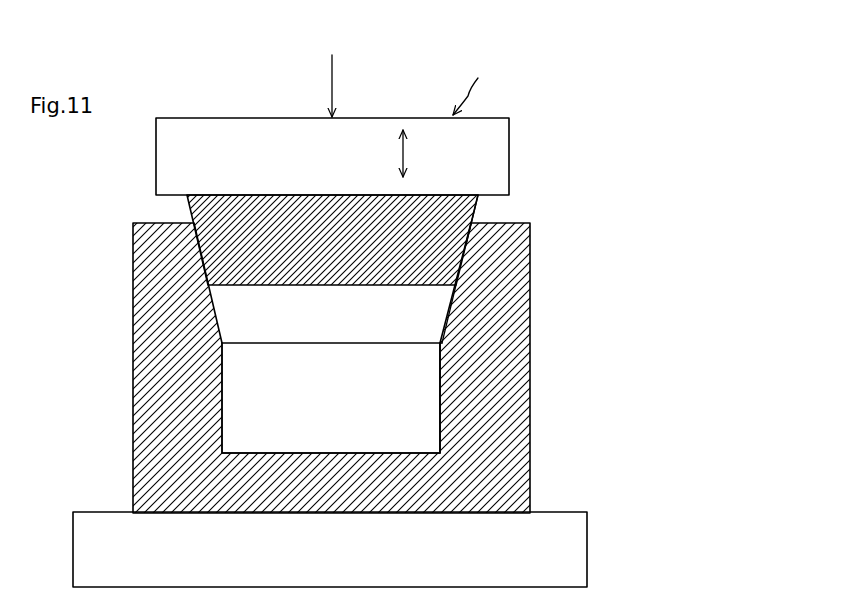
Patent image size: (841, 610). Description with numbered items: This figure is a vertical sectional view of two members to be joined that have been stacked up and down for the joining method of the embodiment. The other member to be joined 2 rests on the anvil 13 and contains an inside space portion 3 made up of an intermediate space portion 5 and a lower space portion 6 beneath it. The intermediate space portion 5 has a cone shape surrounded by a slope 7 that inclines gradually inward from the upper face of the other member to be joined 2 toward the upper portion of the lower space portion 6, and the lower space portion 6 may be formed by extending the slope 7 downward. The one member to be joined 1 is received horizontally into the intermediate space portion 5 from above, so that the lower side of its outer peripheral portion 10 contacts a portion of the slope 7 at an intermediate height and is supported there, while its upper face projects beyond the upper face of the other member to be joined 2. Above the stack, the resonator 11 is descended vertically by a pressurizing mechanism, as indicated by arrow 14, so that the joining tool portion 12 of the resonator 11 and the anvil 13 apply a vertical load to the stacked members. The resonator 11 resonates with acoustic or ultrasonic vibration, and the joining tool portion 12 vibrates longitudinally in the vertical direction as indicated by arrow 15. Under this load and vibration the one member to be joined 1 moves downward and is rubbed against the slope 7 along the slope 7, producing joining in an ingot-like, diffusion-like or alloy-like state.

The one member to be joined 1 is at (187, 213).
The other member to be joined 2 is at (131, 345).
The inside space portion 3 is at (583, 357).
The intermediate space portion 5 is at (430, 328).
The lower space portion 6 is at (443, 420).
The slope 7 is at (454, 303).
The outer peripheral portion 10 is at (462, 260).
The resonator 11 is at (479, 85).
The joining tool portion 12 is at (495, 173).
The anvil 13 is at (577, 558).
The arrow 14 is at (332, 72).
The arrow 15 is at (403, 158).